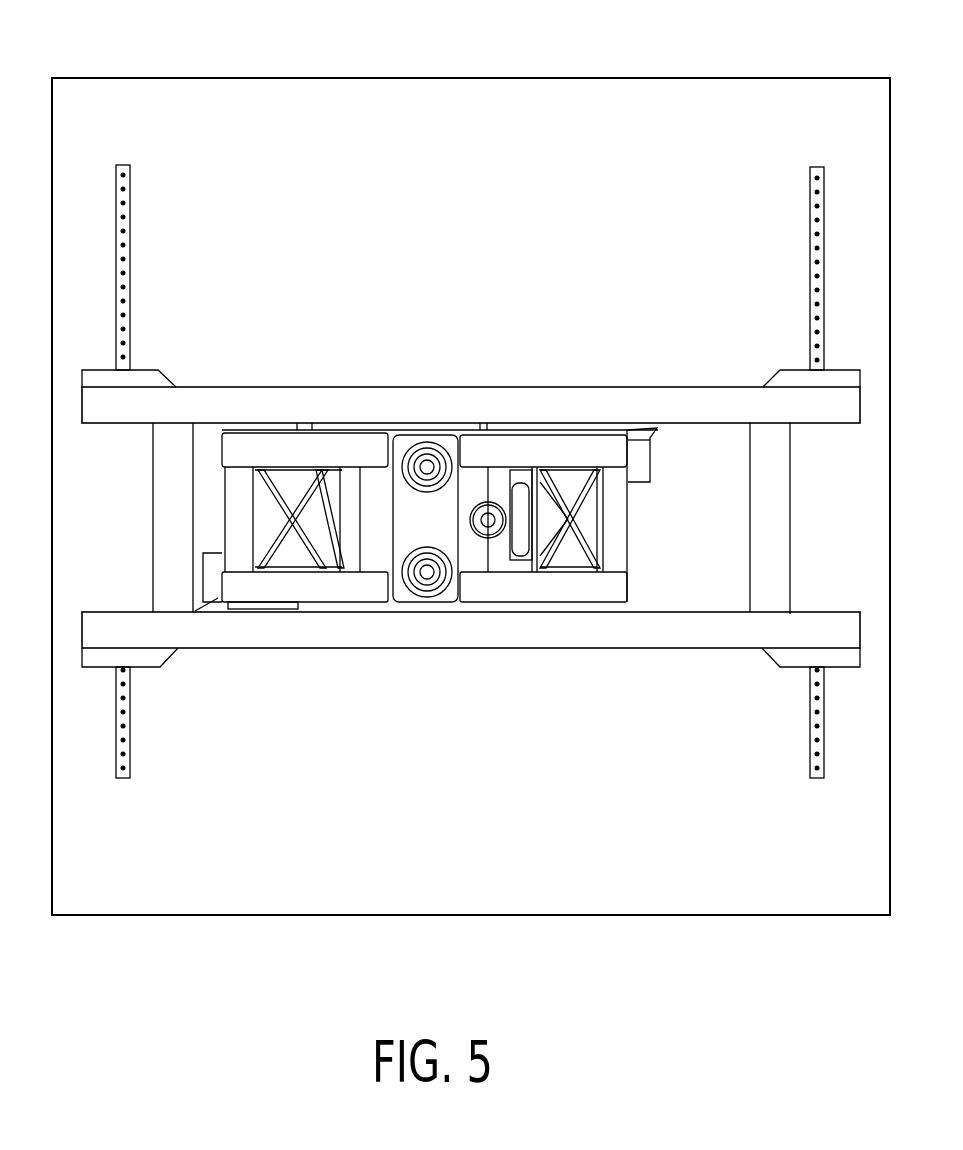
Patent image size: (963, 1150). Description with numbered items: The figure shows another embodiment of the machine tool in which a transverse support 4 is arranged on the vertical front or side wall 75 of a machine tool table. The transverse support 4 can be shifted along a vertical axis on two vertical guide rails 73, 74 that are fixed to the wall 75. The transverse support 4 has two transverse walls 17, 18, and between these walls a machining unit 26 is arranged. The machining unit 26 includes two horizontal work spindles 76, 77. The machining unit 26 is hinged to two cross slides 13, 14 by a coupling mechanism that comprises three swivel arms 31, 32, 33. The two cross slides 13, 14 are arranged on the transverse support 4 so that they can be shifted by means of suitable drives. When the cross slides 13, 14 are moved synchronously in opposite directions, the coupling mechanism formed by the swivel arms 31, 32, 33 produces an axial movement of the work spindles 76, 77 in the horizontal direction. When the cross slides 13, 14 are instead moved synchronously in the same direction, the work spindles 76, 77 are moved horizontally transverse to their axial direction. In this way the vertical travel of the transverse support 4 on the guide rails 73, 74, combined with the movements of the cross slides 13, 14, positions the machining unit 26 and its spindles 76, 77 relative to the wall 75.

The transverse support 4 is at (234, 378).
The cross slide 13 is at (598, 608).
The cross slide 14 is at (313, 607).
The transverse wall 17 is at (680, 638).
The transverse wall 18 is at (612, 398).
The machining unit 26 is at (393, 547).
The swivel arm 31 is at (258, 607).
The swivel arm 32 is at (513, 573).
The swivel arm 33 is at (557, 607).
The vertical guide rail 73 is at (130, 224).
The vertical guide rail 74 is at (813, 213).
The vertical front or side wall 75 is at (506, 98).
The horizontal work spindle 76 is at (430, 452).
The horizontal work spindle 77 is at (427, 592).